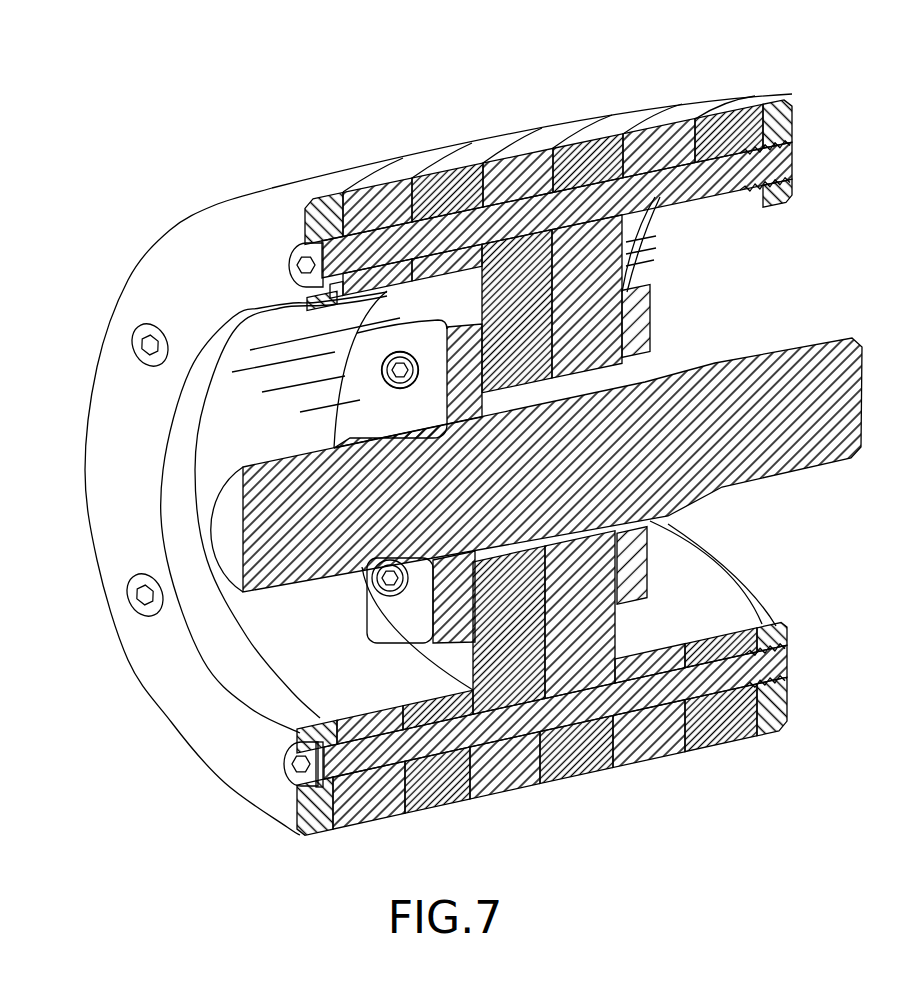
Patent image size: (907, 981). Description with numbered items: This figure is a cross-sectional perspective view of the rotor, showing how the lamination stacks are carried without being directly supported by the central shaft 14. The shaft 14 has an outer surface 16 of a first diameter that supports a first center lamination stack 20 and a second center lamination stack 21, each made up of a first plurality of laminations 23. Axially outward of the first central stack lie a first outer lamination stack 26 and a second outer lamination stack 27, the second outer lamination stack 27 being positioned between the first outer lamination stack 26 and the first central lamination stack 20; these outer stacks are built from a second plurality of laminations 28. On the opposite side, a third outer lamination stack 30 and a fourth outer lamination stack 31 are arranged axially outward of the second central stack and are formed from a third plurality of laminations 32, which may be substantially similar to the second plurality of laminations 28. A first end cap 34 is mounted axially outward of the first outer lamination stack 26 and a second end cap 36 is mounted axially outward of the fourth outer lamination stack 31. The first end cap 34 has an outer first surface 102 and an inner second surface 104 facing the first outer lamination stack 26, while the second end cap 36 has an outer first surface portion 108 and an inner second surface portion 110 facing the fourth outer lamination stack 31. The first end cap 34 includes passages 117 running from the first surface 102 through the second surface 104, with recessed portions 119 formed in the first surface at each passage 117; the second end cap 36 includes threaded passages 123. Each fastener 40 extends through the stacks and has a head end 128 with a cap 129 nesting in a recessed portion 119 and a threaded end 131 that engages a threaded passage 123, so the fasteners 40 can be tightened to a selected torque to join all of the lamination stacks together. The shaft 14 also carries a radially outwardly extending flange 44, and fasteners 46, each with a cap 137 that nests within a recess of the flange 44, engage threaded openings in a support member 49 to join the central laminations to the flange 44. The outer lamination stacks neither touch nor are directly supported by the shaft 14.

The central shaft 14 is at (822, 490).
The outer surface 16 is at (573, 540).
The first center lamination stack 20 is at (492, 157).
The second center lamination stack 21 is at (562, 142).
The first plurality of laminations 23 is at (593, 762).
The first outer lamination stack 26 is at (352, 190).
The second outer lamination stack 27 is at (421, 172).
The second plurality of laminations 28 is at (388, 805).
The third outer lamination stack 30 is at (631, 124).
The fourth outer lamination stack 31 is at (702, 114).
The third plurality of laminations 32 is at (670, 743).
The first end cap 34 is at (165, 722).
The second end cap 36 is at (800, 696).
The fasteners 40 is at (660, 210).
The flange 44 is at (388, 627).
The fasteners 46 is at (385, 400).
The support member 49 is at (645, 326).
The first surface 102 is at (283, 803).
The second surface 104 is at (336, 824).
The first surface portion 108 is at (787, 710).
The second surface portion 110 is at (752, 723).
The passages 117 is at (312, 773).
The recessed portions 119 is at (285, 818).
The threaded passages 123 is at (772, 658).
The head end 128 is at (303, 725).
The cap 129 is at (316, 782).
The threaded end 131 is at (767, 648).
The cap 137 is at (385, 352).